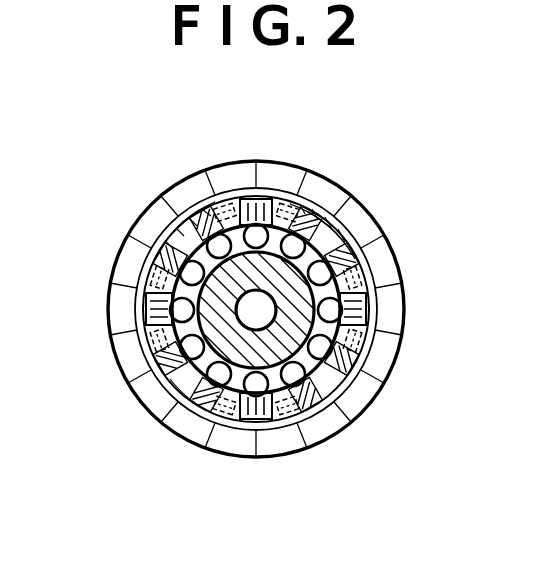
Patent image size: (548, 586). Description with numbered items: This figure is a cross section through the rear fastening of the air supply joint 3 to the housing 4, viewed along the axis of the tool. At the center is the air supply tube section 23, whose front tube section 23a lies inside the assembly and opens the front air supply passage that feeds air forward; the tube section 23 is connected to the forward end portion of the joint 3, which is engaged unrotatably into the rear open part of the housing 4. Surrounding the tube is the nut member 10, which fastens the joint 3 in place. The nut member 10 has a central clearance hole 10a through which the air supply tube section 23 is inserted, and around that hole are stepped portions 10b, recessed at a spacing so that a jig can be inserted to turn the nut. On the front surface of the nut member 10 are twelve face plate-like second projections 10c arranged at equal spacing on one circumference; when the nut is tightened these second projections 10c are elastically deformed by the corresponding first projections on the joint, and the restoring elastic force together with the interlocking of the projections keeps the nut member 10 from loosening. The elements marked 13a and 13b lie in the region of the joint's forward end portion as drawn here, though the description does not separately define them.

The air supply joint 3 is at (380, 393).
The housing 4 is at (365, 247).
The nut member 10 is at (292, 205).
The clearance hole 10a is at (322, 228).
The stepped portions 10b is at (253, 190).
The second projections 10c is at (197, 205).
The pad 13a is at (130, 343).
The pads 13b is at (142, 218).
The air supply tube section 23 is at (400, 296).
The front tube section 23a is at (230, 430).